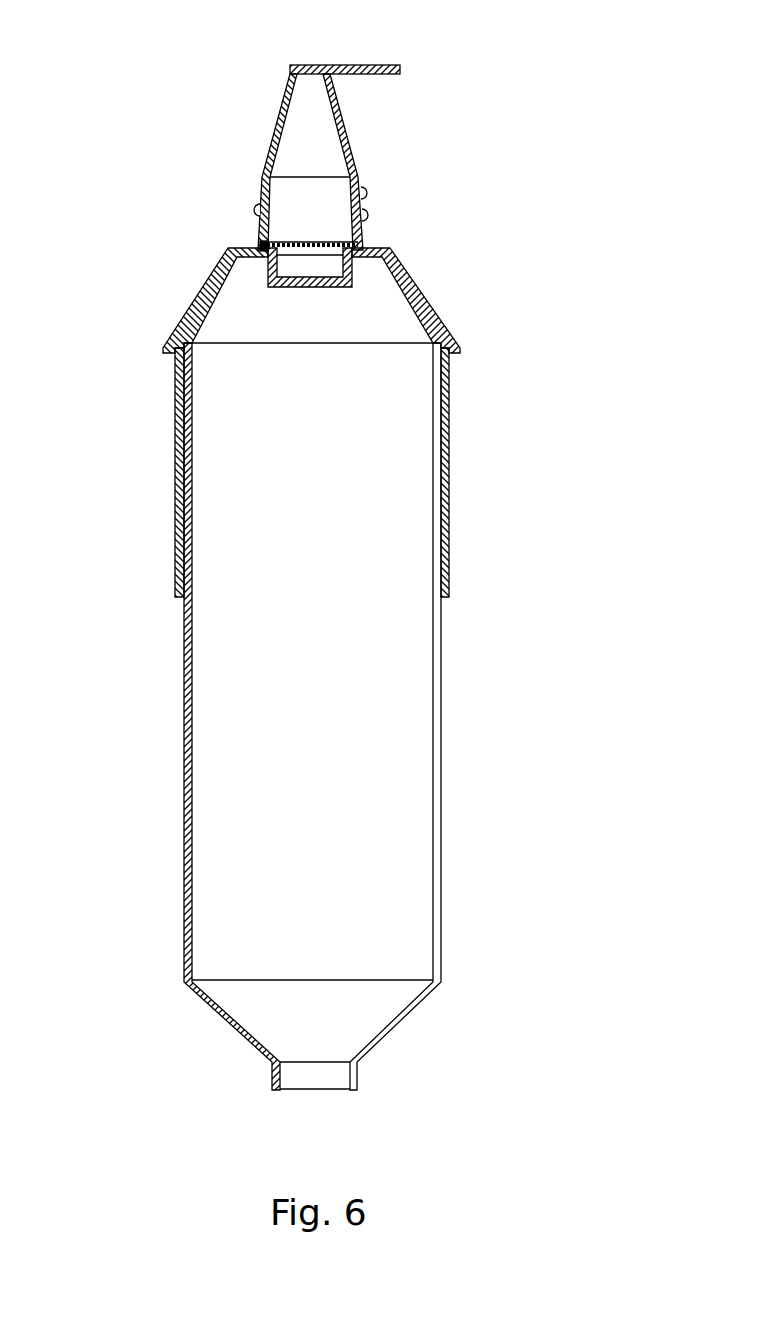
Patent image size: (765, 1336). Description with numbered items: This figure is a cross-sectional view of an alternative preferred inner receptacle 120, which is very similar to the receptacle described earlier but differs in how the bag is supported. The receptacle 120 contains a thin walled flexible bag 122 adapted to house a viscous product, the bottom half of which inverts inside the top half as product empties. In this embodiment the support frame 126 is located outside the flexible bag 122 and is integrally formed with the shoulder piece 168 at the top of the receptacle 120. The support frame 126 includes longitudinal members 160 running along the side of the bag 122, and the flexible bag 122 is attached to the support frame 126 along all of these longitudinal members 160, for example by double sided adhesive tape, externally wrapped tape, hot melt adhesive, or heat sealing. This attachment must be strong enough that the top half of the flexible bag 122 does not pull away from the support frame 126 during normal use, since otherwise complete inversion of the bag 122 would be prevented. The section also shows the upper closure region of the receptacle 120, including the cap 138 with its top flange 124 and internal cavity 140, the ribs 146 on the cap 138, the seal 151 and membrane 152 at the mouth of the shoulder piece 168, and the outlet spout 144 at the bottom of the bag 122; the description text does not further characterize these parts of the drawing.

The inner receptacle 120 is at (359, 700).
The flexible bag 122 is at (441, 706).
The cap flange 124 is at (350, 66).
The support frame 126 is at (456, 455).
The cap 138 is at (388, 126).
The cap cavity 140 is at (317, 137).
The outlet spout 144 is at (308, 1079).
The retaining ribs 146 is at (365, 216).
The seal 151 is at (270, 243).
The membrane 152 is at (333, 244).
The longitudinal members 160 is at (180, 541).
The shoulder piece 168 is at (427, 301).